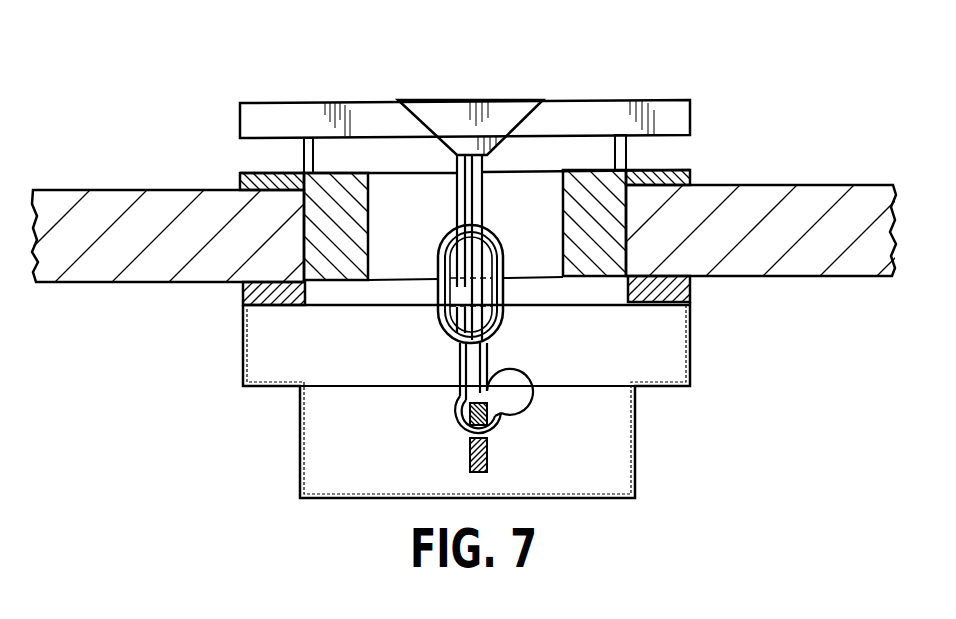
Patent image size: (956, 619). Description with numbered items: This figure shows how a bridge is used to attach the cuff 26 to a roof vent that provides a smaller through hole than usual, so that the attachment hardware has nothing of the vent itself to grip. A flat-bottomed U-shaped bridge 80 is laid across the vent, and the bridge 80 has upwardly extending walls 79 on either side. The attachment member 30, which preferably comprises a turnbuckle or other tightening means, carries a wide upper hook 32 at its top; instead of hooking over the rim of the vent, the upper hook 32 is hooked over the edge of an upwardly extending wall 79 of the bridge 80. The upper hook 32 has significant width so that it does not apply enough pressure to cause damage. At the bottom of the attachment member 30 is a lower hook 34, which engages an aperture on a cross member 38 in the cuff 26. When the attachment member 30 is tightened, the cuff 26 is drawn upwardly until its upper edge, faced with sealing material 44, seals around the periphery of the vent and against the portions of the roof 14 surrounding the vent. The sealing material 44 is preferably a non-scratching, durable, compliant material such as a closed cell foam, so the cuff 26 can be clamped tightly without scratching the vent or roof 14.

The upwardly extending walls 79 is at (304, 110).
The flat-bottomed U-shaped bridge 80 is at (658, 106).
The wide upper hook 32 is at (443, 111).
The roof 14 is at (808, 186).
The sealing material 44 is at (690, 285).
The attachment member 30 is at (482, 295).
The cuff 26 is at (637, 450).
The lower hook 34 is at (456, 405).
The cross member 38 is at (490, 455).